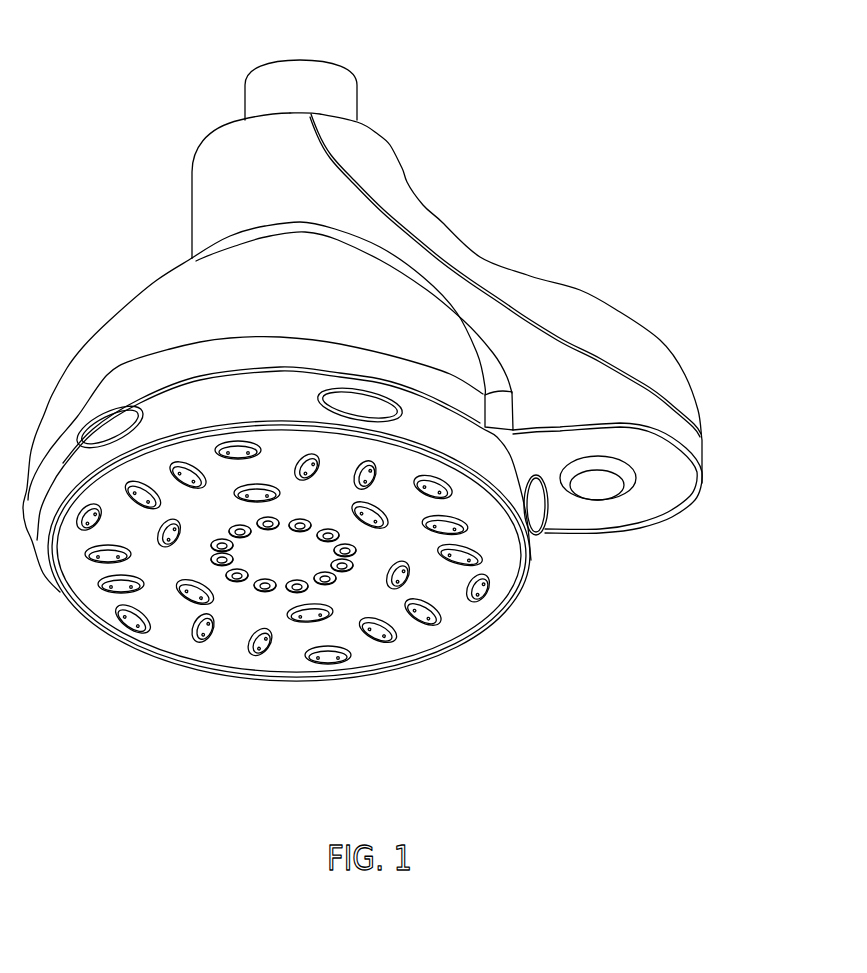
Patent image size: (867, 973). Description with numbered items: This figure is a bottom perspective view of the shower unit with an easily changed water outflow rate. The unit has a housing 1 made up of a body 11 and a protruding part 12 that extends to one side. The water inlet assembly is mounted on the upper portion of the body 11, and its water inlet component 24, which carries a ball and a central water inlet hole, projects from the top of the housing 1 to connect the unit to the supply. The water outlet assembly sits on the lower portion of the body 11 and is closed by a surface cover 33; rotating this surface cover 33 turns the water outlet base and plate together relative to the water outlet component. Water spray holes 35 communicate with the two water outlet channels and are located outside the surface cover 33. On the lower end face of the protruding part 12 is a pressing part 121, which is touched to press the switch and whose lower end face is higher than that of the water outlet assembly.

The housing 1 is at (370, 390).
The body 11 is at (340, 270).
The protruding part 12 is at (455, 377).
The pressing part 121 is at (588, 488).
The water inlet component 24 is at (268, 88).
The surface cover 33 is at (309, 593).
The water spray hole 35 is at (197, 640).